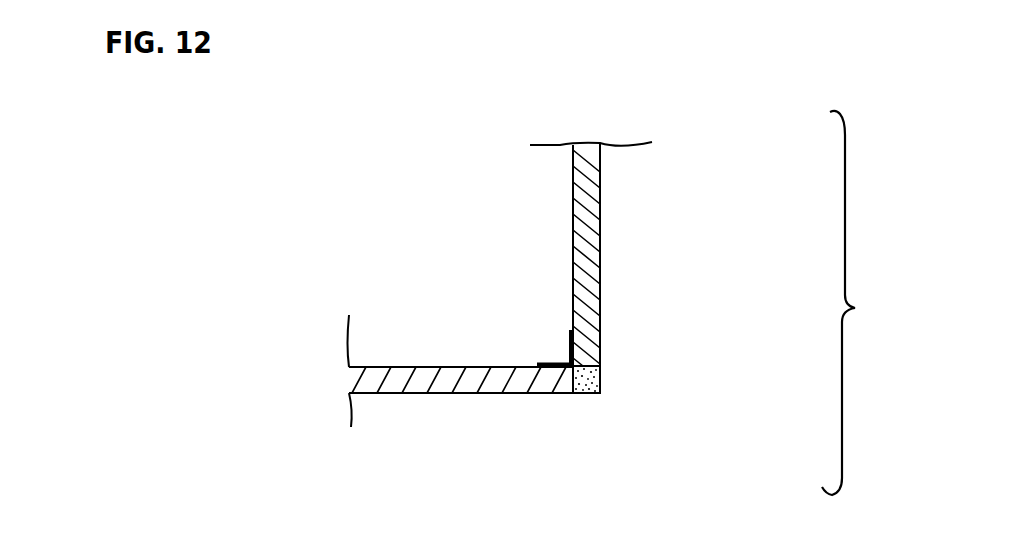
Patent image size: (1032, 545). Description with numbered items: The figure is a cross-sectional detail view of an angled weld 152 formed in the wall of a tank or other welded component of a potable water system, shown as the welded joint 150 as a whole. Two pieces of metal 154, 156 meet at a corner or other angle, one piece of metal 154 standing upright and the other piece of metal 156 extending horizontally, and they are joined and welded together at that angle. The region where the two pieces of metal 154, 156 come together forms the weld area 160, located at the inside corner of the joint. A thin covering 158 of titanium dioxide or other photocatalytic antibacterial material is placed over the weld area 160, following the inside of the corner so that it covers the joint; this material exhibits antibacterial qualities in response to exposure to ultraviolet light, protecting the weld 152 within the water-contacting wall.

The assembly 150 is at (371, 204).
The angled weld 152 is at (879, 303).
The piece of metal 154 is at (604, 250).
The piece of metal 156 is at (442, 398).
The thin covering 158 is at (562, 350).
The weld area 160 is at (607, 383).